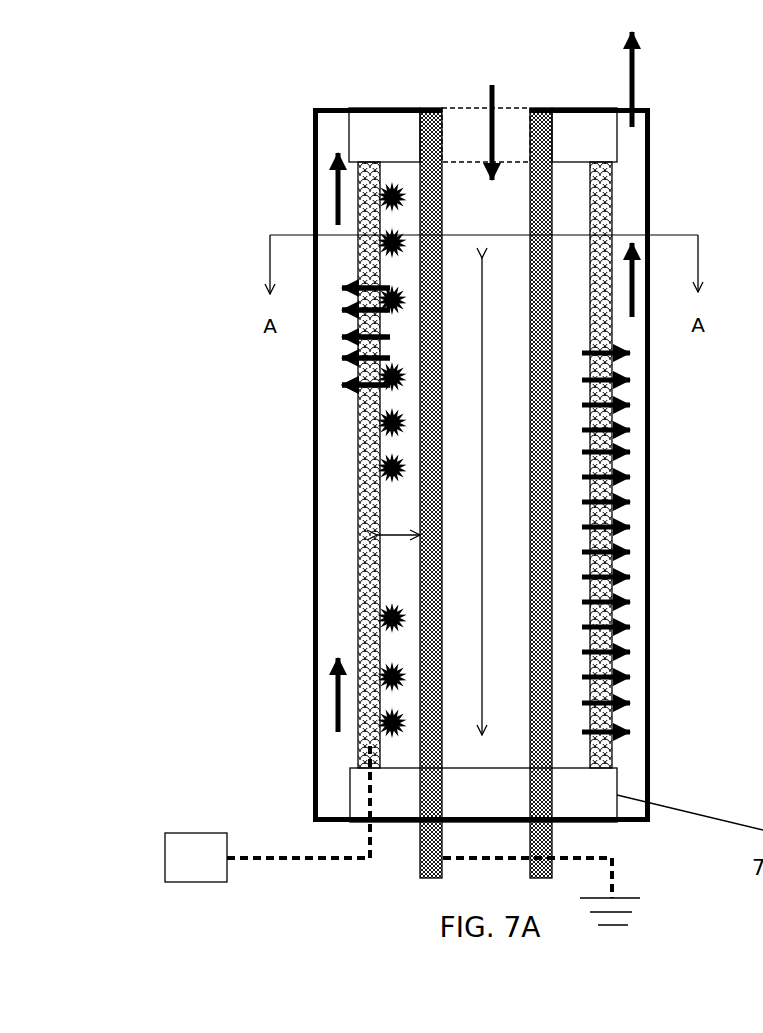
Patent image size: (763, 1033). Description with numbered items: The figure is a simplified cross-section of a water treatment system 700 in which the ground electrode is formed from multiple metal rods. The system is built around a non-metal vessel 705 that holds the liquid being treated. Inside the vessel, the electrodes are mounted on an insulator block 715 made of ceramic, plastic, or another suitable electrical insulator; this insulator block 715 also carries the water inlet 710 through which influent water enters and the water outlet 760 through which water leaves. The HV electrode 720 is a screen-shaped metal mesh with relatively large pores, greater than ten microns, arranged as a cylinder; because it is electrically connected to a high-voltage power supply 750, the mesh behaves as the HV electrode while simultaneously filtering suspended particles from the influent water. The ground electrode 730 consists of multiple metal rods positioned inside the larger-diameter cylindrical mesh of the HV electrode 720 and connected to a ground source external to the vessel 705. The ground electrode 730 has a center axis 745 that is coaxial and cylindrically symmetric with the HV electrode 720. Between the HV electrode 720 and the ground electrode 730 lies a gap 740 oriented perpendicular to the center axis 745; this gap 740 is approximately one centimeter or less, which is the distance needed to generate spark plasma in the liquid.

The water treatment system 700 is at (247, 100).
The non-metal vessel 705 is at (312, 457).
The water inlet 710 is at (488, 108).
The insulator block 715 is at (397, 108).
The HV electrode 720 is at (360, 617).
The ground electrode 730 is at (418, 852).
The gap 740 is at (383, 535).
The center axis 745 is at (482, 467).
The high-voltage power supply 750 is at (193, 833).
The water outlet 760 is at (633, 108).